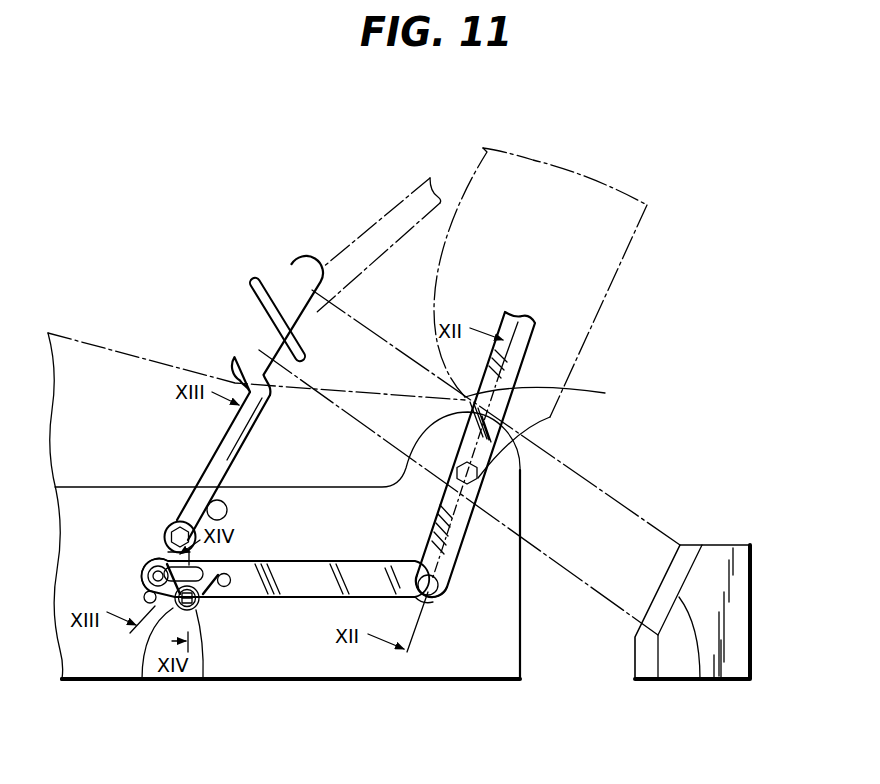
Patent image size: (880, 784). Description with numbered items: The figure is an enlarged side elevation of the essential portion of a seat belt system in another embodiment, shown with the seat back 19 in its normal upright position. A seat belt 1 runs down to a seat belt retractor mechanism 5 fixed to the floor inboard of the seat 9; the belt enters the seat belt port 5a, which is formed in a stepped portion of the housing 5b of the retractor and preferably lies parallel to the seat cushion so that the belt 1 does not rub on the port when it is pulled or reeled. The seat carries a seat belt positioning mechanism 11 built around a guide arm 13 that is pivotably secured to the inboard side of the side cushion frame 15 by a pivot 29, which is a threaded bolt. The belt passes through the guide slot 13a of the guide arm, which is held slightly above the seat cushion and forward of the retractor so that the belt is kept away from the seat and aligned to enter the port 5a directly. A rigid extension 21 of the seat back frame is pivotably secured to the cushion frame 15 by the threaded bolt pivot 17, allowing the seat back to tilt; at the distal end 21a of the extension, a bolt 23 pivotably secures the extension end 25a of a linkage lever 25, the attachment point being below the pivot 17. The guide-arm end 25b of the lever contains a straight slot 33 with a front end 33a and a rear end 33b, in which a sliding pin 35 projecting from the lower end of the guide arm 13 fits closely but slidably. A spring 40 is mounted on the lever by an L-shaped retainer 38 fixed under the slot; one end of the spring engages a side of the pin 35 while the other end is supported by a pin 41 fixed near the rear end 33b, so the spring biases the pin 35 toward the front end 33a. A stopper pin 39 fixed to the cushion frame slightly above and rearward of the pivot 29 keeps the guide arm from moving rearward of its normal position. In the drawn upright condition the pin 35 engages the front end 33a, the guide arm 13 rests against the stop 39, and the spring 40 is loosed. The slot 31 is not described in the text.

The seat belt 1 is at (373, 229).
The seat belt retractor mechanism 5 is at (757, 556).
The seat belt port 5a is at (700, 680).
The housing 5b is at (733, 610).
The seat 9 is at (128, 355).
The seat belt positioning mechanism 11 is at (239, 624).
The guide arm 13 is at (209, 468).
The guide slot 13a is at (276, 305).
The side cushion frame 15 is at (100, 658).
The pivot 17 is at (478, 471).
The seat back 19 is at (652, 212).
The extension 21 is at (512, 400).
The distal end 21a is at (455, 560).
The bolt 23 is at (440, 603).
The linkage lever 25 is at (290, 600).
The extension end 25a is at (437, 606).
The guide-arm end 25b is at (145, 588).
The pivot 29 is at (168, 520).
The slot 31 is at (265, 348).
The straight slot 33 is at (160, 560).
The front end of the slot 33a is at (149, 576).
The rear end of the slot 33b is at (195, 564).
The sliding pin 35 is at (150, 560).
The retainer 38 is at (201, 680).
The stopper pin 39 is at (226, 505).
The spring 40 is at (142, 680).
The pin 41 is at (231, 579).